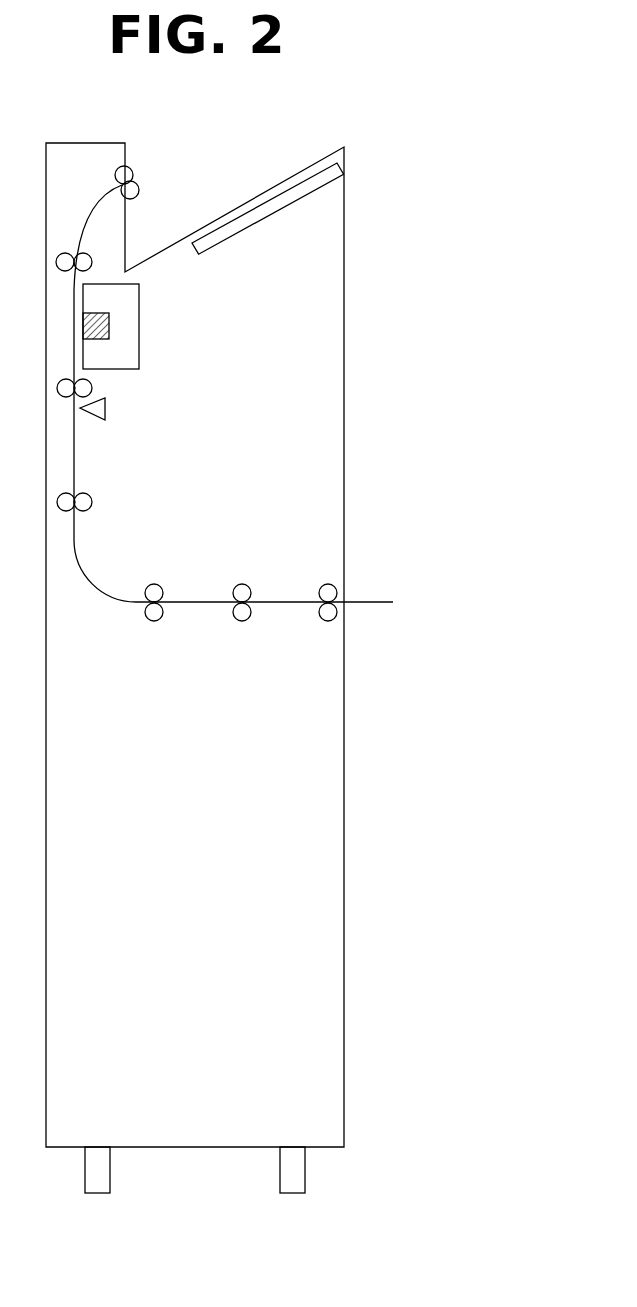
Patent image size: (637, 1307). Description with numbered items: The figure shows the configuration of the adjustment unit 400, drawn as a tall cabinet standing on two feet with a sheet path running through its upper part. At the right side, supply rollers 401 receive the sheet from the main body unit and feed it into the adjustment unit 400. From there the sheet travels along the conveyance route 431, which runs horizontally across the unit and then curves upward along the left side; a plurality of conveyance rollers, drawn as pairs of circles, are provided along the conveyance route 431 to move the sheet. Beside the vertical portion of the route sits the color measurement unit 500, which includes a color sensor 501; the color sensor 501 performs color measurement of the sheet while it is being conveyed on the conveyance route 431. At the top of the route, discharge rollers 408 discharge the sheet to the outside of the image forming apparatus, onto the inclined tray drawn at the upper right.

The adjustment unit 400 is at (62, 143).
The discharge rollers 408 is at (135, 171).
The color measurement unit 500 is at (139, 299).
The color sensor 501 is at (109, 326).
The conveyance route 431 is at (203, 600).
The supply rollers 401 is at (327, 585).